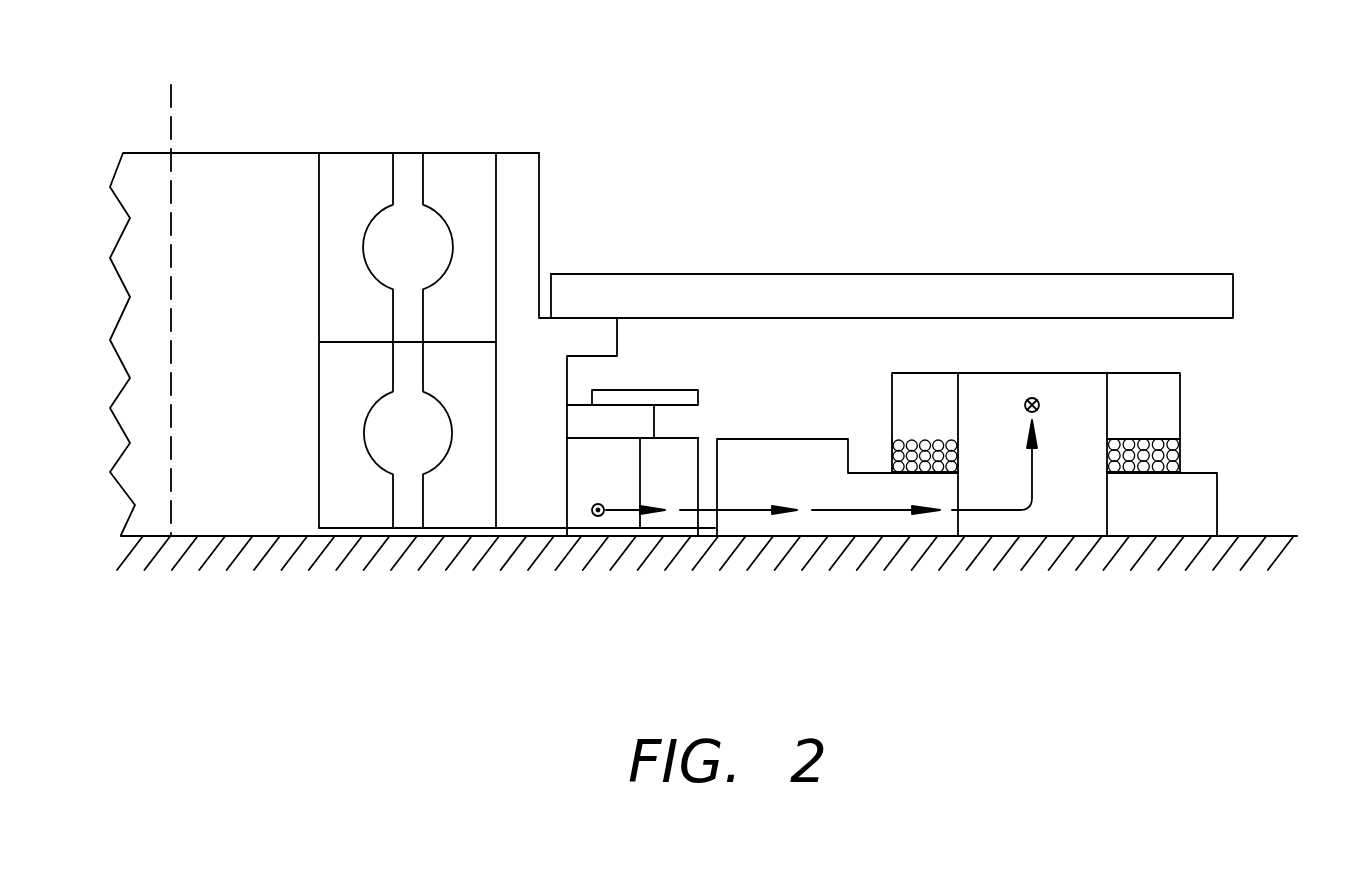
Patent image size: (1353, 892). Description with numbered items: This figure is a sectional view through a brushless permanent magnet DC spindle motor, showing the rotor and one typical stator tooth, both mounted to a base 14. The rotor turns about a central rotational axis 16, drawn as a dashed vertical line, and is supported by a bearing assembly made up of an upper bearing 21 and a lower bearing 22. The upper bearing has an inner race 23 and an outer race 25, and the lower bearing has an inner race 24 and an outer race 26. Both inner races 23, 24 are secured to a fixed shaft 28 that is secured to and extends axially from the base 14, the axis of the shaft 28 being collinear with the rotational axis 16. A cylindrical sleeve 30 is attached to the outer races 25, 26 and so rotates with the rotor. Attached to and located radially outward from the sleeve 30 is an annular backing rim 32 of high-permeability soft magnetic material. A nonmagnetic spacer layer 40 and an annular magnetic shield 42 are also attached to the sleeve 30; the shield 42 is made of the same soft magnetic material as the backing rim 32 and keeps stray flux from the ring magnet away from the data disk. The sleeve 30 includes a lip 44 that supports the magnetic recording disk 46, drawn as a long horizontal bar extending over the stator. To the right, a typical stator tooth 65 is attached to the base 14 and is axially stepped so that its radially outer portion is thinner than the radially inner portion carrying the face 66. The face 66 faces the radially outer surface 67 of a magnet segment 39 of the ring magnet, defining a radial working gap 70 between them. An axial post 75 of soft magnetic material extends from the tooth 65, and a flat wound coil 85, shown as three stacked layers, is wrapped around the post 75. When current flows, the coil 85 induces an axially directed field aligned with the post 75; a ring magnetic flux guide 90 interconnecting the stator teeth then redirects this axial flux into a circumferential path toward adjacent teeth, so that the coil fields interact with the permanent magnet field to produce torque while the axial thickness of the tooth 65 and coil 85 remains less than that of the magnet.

The base 14 is at (1283, 535).
The central rotational axis 16 is at (172, 93).
The upper bearing 21 is at (413, 215).
The lower bearing 22 is at (432, 440).
The inner race 23 is at (359, 177).
The inner race 24 is at (348, 490).
The outer race 25 is at (473, 170).
The outer race 26 is at (480, 505).
The fixed shaft 28 is at (267, 197).
The cylindrical sleeve 30 is at (517, 170).
The annular backing rim 32 is at (585, 520).
The magnet segment 39 is at (668, 520).
The spacer layer 40 is at (636, 420).
The annular magnetic shield 42 is at (681, 390).
The lip 44 is at (600, 330).
The magnetic recording disk 46 is at (897, 290).
The stator tooth 65 is at (1218, 488).
The face 66 is at (720, 437).
The radially outer surface 67 is at (712, 520).
The radial working gap 70 is at (710, 442).
The axial post 75 is at (1092, 390).
The coil 85 is at (1173, 457).
The ring magnetic flux guide 90 is at (1162, 385).